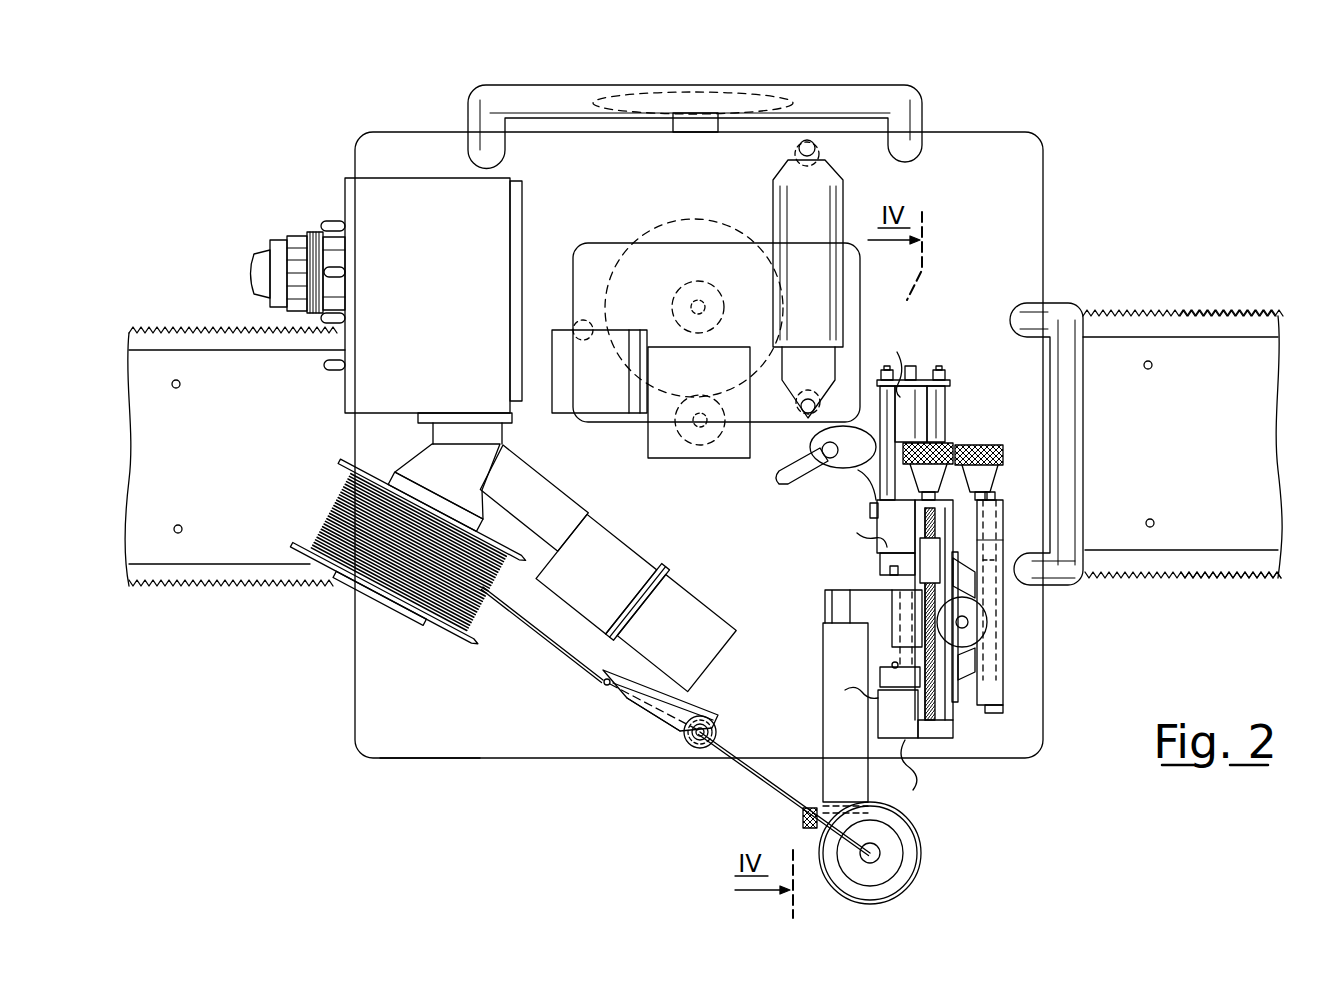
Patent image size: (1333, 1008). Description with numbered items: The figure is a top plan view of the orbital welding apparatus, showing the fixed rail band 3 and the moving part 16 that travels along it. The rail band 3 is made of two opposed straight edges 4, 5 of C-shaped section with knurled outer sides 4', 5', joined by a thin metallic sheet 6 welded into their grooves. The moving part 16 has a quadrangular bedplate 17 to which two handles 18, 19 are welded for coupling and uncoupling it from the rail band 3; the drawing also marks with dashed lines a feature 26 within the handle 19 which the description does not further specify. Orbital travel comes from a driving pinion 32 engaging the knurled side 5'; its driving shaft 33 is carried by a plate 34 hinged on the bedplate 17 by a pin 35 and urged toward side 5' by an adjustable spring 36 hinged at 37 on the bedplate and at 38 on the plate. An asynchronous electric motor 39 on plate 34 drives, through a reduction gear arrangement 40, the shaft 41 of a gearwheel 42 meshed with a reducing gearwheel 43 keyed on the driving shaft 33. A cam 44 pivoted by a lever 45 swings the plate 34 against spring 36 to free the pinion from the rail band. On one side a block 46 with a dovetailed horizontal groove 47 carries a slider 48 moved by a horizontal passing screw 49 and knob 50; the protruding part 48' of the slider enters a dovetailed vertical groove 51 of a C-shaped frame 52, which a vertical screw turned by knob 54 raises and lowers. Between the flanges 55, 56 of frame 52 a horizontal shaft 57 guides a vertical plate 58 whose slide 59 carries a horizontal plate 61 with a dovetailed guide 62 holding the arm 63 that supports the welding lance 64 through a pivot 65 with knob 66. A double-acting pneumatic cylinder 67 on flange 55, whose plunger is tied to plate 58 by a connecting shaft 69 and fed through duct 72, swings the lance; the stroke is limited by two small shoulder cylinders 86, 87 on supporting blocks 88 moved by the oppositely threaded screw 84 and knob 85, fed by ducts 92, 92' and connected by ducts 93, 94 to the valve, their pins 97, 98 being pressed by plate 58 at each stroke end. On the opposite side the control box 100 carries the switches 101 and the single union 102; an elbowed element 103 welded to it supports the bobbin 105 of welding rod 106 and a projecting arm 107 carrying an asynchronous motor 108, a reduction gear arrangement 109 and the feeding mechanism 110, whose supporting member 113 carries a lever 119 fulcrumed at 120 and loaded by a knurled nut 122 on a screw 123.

The rail band 3 is at (197, 590).
The straight edge 4 is at (698, 604).
The knurled outer side 4' is at (1231, 599).
The straight edge 5 is at (706, 295).
The knurled outer side 5' is at (1228, 283).
The thin metallic sheet 6 is at (148, 462).
The moving part 16 is at (1046, 210).
The bedplate 17 is at (432, 760).
The handle 18 is at (1072, 432).
The handle 19 is at (918, 100).
The handle bore 26 is at (638, 116).
The driving pinion 32 is at (673, 304).
The driving shaft 33 is at (704, 304).
The plate 34 is at (860, 292).
The pin 35 is at (576, 322).
The adjustable spring 36 is at (786, 211).
The hinge point 37 is at (799, 148).
The hinge point 38 is at (800, 407).
The asynchronous electric motor 39 is at (573, 402).
The reduction gear arrangement 40 is at (654, 445).
The shaft 41 is at (700, 430).
The gearwheel 42 is at (712, 432).
The reducing gearwheel 43 is at (690, 224).
The cam 44 is at (826, 442).
The lever 45 is at (780, 480).
The block 46 is at (1004, 680).
The dovetailed horizontal groove 47 is at (1000, 706).
The slider 48 is at (1037, 590).
The protruding part of slider 48' is at (1042, 592).
The horizontal passing screw 49 is at (987, 520).
The knob 50 is at (985, 472).
The dovetailed vertical groove 51 is at (962, 692).
The C-shaped frame 52 is at (978, 546).
The knob 54 is at (988, 622).
The flange 55 is at (871, 509).
The flange 56 is at (944, 735).
The horizontal shaft 57 is at (934, 610).
The vertical plate 58 is at (904, 632).
The slide 59 is at (893, 620).
The horizontal plate 61 is at (852, 612).
The dovetailed guide 62 is at (828, 602).
The arm 63 is at (842, 735).
The welding lance 64 is at (922, 852).
The pivot 65 is at (825, 805).
The knob 66 is at (803, 818).
The double-acting pneumatic cylinder 67 is at (930, 408).
The horizontal connecting shaft 69 is at (914, 366).
The duct 72 is at (897, 354).
The screw 84 is at (950, 736).
The knob 85 is at (950, 446).
The small shoulder cylinder 86 is at (880, 526).
The small shoulder cylinder 87 is at (886, 728).
The movable supporting block 88 is at (880, 563).
The duct 92 is at (845, 535).
The duct 92' is at (829, 700).
The duct 93 is at (860, 473).
The duct 94 is at (912, 776).
The pin 97 is at (890, 572).
The pin 98 is at (891, 665).
The control box 100 is at (398, 205).
The switches 101 is at (330, 221).
The single union 102 is at (262, 252).
The elbowed element 103 is at (498, 451).
The bobbin 105 is at (446, 643).
The welding rod 106 is at (520, 618).
The projecting arm 107 is at (575, 513).
The asynchronous electric motor 108 is at (630, 545).
The reduction gear arrangement 109 is at (688, 606).
The feeding mechanism 110 is at (632, 705).
The supporting member 113 is at (712, 712).
The lever 119 is at (652, 718).
The fulcrum 120 is at (603, 683).
The knurled nut 122 is at (714, 730).
The screw 123 is at (693, 742).